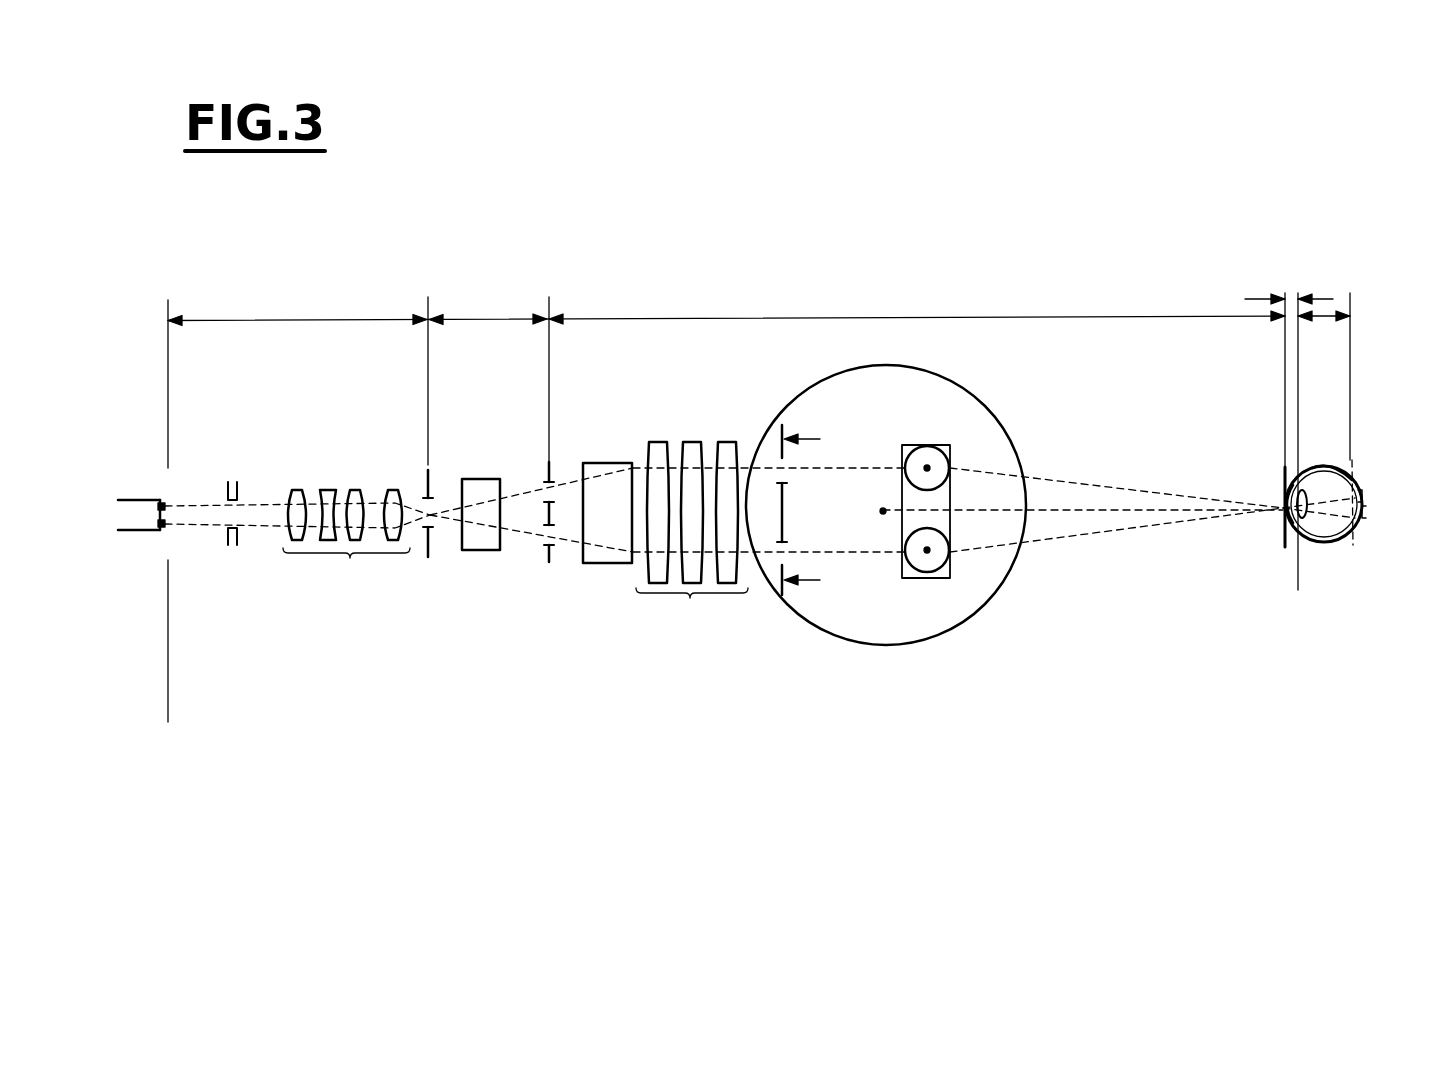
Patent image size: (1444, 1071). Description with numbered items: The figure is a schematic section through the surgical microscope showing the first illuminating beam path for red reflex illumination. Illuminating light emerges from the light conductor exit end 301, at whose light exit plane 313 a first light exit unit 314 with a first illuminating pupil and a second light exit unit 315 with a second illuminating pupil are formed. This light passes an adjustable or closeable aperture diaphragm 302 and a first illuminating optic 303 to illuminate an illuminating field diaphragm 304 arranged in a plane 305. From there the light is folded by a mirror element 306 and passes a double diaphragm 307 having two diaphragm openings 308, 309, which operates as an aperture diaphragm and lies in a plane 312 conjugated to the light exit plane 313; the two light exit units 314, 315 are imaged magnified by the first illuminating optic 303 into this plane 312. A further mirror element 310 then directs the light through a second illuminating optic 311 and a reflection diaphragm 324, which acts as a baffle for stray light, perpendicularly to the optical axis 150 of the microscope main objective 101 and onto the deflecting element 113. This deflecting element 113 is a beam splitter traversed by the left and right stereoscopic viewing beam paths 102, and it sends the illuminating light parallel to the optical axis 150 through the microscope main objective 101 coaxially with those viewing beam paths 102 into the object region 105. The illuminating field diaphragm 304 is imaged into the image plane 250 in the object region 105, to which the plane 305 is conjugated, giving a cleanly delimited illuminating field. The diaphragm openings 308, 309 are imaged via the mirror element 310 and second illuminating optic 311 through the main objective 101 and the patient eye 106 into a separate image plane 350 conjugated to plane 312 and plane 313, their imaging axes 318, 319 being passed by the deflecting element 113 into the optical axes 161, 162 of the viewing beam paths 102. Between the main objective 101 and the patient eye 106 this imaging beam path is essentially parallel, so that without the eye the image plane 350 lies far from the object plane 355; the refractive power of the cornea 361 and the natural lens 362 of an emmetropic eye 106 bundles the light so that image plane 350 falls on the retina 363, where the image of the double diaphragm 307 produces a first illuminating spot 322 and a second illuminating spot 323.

The microscope main objective 101 is at (863, 620).
The stereoscopic viewing beam paths 102 is at (932, 460).
The object region 105 is at (1272, 530).
The patient eye 106 is at (1345, 535).
The deflecting element 113 is at (910, 578).
The optical axis 150 is at (883, 511).
The optical axis of stereoscopic viewing beam path 161 is at (1130, 528).
The optical axis of stereoscopic viewing beam path 162 is at (1130, 492).
The image plane 250 is at (1300, 330).
The light conductor exit end 301 is at (190, 552).
The aperture diaphragm 302 is at (233, 548).
The first illuminating optic 303 is at (350, 558).
The illuminating field diaphragm 304 is at (430, 557).
The plane 305 is at (430, 308).
The mirror element 306 is at (483, 550).
The double diaphragm 307 is at (552, 562).
The diaphragm opening 308 is at (530, 482).
The diaphragm opening 309 is at (548, 560).
The mirror element 310 is at (610, 563).
The second illuminating optic 311 is at (692, 598).
The plane 312 is at (550, 303).
The light exit plane 313 is at (168, 305).
The first light exit unit 314 is at (163, 530).
The second light exit unit 315 is at (163, 530).
The optical axis of imaging beam path 318 is at (568, 487).
The optical axis of imaging beam path 319 is at (577, 545).
The first illuminating spot 322 is at (1362, 493).
The second illuminating spot 323 is at (1363, 513).
The reflection diaphragm 324 is at (782, 595).
The image plane 350 is at (1352, 305).
The object plane 355 is at (1292, 293).
The cornea 361 is at (1285, 555).
The lens 362 is at (1308, 512).
The retina 363 is at (1355, 473).